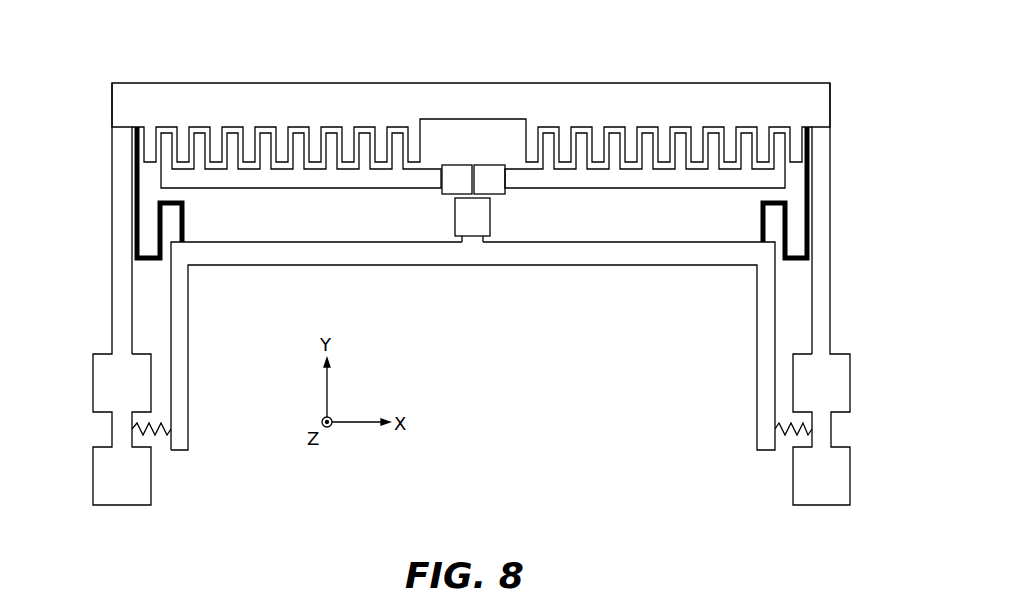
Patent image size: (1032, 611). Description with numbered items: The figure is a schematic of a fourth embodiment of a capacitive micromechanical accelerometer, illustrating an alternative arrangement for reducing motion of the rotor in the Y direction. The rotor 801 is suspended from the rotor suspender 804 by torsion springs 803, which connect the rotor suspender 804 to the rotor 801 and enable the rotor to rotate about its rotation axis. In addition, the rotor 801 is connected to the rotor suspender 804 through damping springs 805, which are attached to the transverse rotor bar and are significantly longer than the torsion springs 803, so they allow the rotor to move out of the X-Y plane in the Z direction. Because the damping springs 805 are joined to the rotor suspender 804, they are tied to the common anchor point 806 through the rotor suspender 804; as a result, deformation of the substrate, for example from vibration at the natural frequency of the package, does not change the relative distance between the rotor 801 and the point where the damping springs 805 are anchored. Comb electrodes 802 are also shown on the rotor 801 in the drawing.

The rotor 801 is at (522, 81).
The movable comb electrodes 802 is at (198, 192).
The torsion springs 803 is at (159, 441).
The rotor suspender 804 is at (534, 268).
The damping springs 805 is at (133, 205).
The common anchor point 806 is at (471, 198).